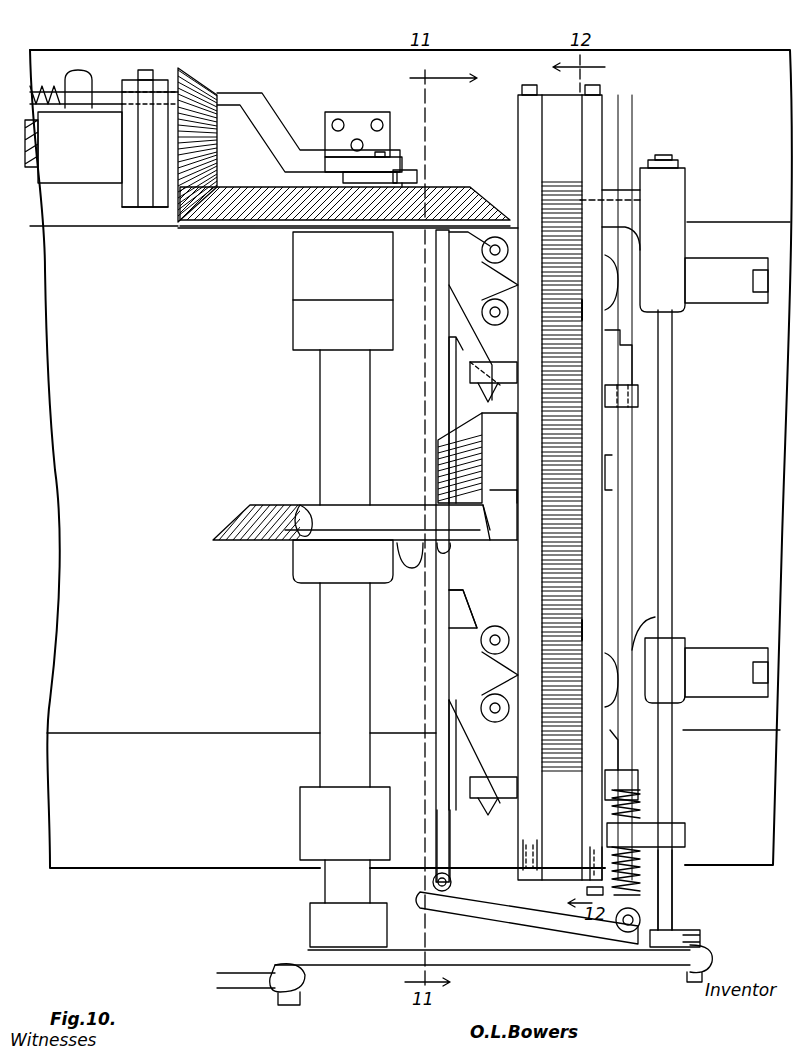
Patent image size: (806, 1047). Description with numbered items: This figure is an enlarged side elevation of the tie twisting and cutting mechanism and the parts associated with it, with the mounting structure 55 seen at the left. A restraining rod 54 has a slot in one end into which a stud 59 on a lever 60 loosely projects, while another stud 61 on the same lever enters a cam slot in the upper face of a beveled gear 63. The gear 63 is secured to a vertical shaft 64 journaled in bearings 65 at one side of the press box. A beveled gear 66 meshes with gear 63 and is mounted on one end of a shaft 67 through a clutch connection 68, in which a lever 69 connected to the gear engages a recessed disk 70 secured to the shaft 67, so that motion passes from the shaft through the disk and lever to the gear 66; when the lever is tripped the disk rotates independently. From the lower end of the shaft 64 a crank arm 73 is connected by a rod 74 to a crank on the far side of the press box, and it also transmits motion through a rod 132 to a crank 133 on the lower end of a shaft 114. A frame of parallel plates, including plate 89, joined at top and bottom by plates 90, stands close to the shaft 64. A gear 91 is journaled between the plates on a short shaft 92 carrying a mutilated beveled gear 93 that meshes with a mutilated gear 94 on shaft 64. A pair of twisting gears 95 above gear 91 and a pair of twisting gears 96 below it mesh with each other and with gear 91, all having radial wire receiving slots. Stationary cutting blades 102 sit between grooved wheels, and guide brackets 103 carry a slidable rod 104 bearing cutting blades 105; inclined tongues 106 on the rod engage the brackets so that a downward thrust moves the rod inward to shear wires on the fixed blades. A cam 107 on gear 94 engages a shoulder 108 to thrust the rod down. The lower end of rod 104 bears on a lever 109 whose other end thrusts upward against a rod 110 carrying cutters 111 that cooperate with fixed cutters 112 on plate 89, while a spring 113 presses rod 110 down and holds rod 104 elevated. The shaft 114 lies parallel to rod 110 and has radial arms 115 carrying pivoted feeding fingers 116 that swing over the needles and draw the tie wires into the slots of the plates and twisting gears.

The rod 54 is at (270, 135).
The motor housing 55 is at (92, 178).
The stud 59 is at (382, 152).
The lever 60 is at (357, 172).
The stud 61 is at (405, 195).
The beveled gear 63 is at (250, 212).
The vertical shaft 64 is at (325, 396).
The bearings 65 is at (300, 325).
The beveled gear 66 is at (200, 95).
The shaft 67 is at (40, 136).
The clutch connection 68 is at (152, 208).
The lever 69 is at (146, 70).
The recessed disk 70 is at (124, 80).
The crank arm 73 is at (305, 918).
The rod 74 is at (228, 972).
The plate 89 is at (598, 163).
The plates 90 is at (595, 100).
The gear 91 is at (568, 460).
The short shaft 92 is at (612, 470).
The mutilated beveled gear 93 is at (437, 430).
The mutilated gear 94 is at (258, 505).
The twisting gears 95 is at (565, 220).
The twisting gears 96 is at (560, 628).
The stationary cutting blade 102 is at (480, 305).
The guide brackets 103 is at (490, 808).
The rod 104 is at (443, 645).
The cutting blades 105 is at (470, 238).
The inclined tongues 106 is at (470, 355).
The cam 107 is at (415, 575).
The shoulder 108 is at (452, 562).
The lever 109 is at (482, 910).
The rod 110 is at (628, 515).
The cutters 111 is at (608, 340).
The fixed cutters 112 is at (615, 695).
The spring 113 is at (635, 880).
The shaft 114 is at (675, 903).
The radial arms 115 is at (690, 292).
The feeding fingers 116 is at (640, 245).
The rod 132 is at (548, 968).
The crank 133 is at (700, 935).